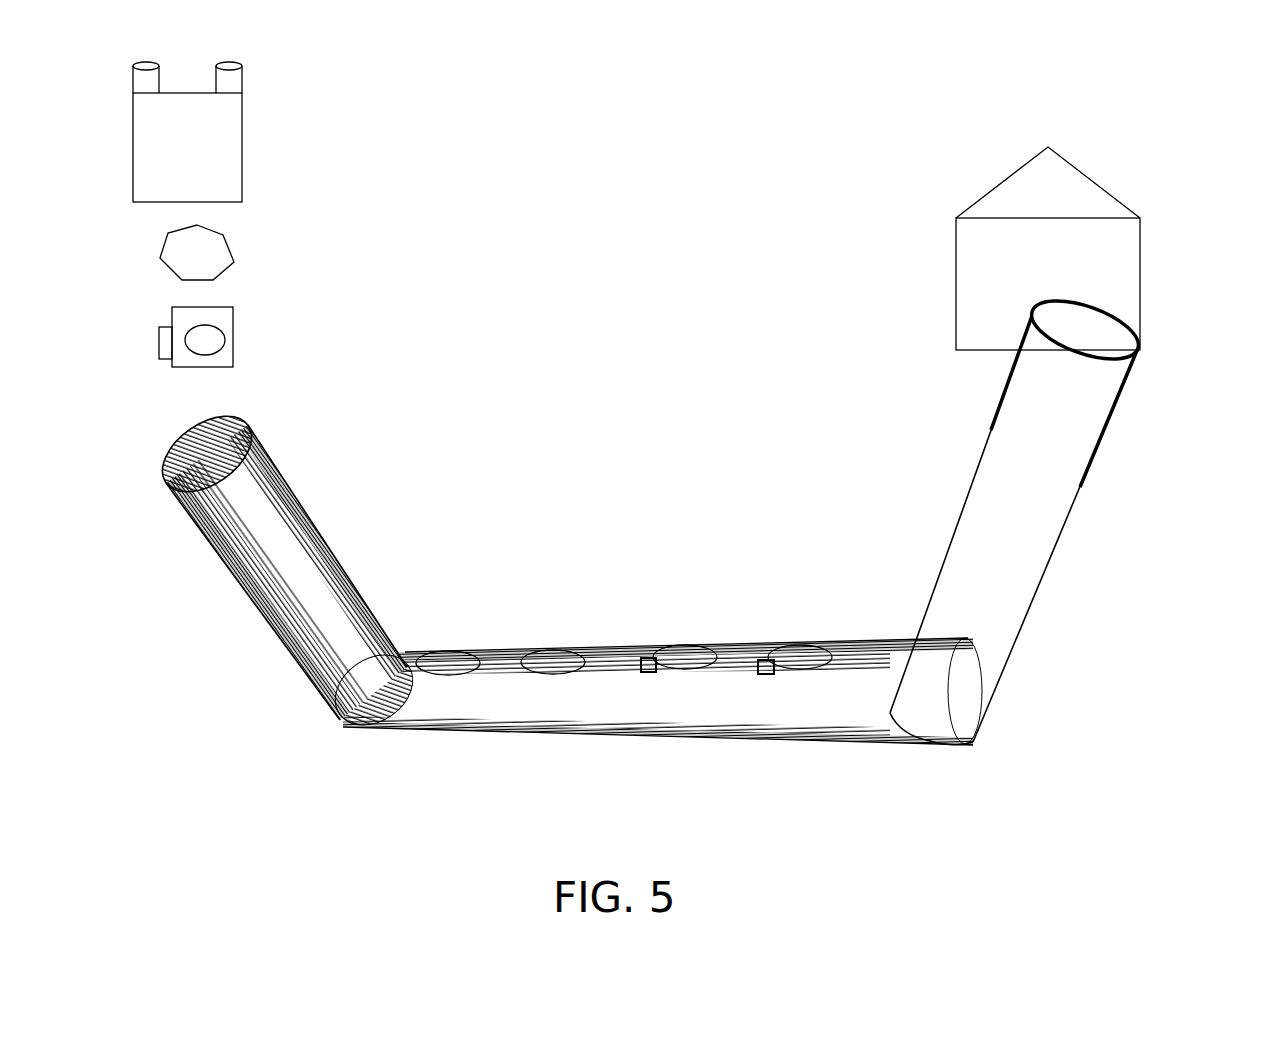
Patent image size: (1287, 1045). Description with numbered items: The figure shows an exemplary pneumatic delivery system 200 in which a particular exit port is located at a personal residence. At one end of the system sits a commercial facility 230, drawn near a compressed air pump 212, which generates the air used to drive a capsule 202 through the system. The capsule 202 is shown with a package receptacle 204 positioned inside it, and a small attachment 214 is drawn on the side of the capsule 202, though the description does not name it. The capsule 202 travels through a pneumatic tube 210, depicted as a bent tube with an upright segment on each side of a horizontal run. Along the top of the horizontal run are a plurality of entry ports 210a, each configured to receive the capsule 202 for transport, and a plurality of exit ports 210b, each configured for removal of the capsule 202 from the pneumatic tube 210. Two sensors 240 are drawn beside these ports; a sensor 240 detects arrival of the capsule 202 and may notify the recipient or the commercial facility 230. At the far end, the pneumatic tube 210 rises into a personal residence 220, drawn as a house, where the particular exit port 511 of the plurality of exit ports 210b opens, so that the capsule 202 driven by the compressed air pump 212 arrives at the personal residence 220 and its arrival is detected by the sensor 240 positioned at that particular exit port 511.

The pneumatic delivery system 200 is at (1281, 105).
The commercial facility 230 is at (253, 132).
The compressed air pump 212 is at (222, 243).
The capsule 202 is at (214, 306).
The package receptacle 204 is at (228, 338).
The camera attachment 214 is at (158, 360).
The pneumatic tube 210 is at (707, 558).
The entry ports 210a is at (253, 432).
The exit ports 210b is at (676, 645).
The sensor 240 is at (650, 674).
The personal residence 220 is at (943, 277).
The particular exit port 511 is at (1108, 345).